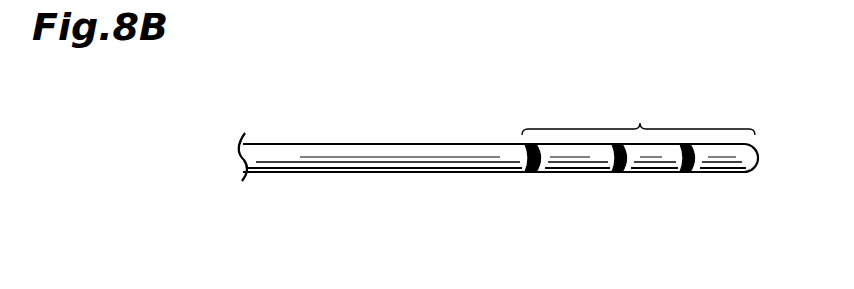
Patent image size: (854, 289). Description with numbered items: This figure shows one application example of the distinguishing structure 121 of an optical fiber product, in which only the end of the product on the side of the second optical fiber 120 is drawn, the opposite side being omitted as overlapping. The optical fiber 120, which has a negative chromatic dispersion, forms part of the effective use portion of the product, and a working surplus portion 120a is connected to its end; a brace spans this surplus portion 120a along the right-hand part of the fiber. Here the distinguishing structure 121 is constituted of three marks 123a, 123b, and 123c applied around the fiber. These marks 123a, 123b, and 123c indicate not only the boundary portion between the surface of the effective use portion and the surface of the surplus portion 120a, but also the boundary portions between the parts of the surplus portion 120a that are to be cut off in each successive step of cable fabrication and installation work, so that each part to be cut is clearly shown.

The second optical fiber 120 is at (378, 143).
The surplus portion 120a is at (638, 113).
The distinguishing structure 121 is at (522, 185).
The mark 123a is at (531, 174).
The mark 123b is at (617, 174).
The mark 123c is at (684, 174).